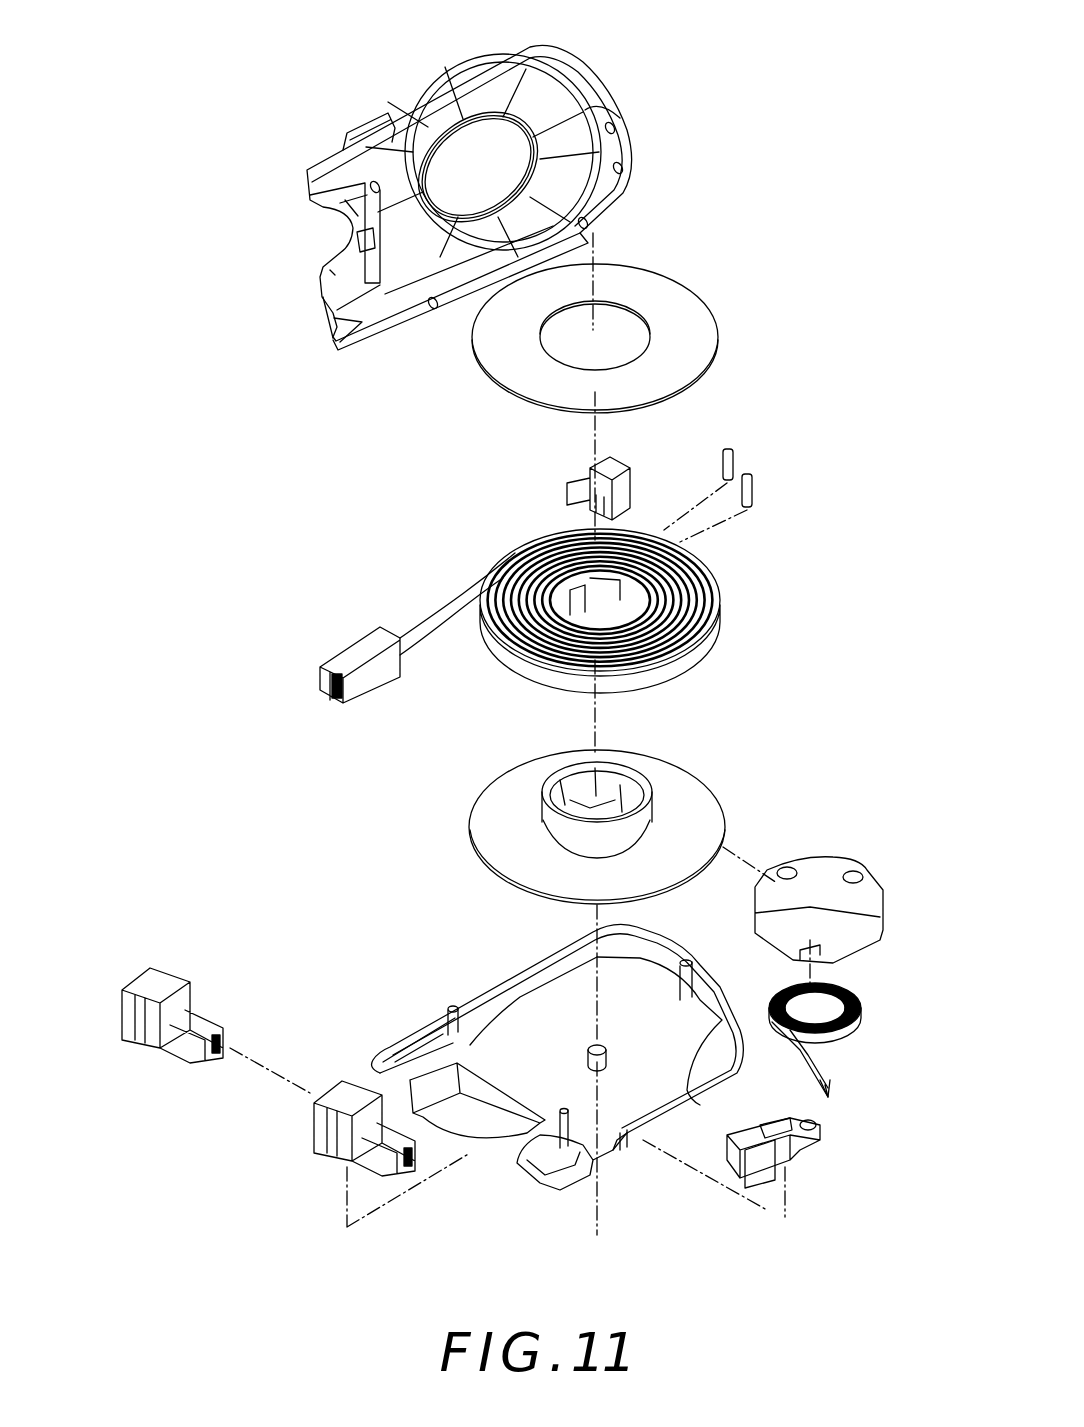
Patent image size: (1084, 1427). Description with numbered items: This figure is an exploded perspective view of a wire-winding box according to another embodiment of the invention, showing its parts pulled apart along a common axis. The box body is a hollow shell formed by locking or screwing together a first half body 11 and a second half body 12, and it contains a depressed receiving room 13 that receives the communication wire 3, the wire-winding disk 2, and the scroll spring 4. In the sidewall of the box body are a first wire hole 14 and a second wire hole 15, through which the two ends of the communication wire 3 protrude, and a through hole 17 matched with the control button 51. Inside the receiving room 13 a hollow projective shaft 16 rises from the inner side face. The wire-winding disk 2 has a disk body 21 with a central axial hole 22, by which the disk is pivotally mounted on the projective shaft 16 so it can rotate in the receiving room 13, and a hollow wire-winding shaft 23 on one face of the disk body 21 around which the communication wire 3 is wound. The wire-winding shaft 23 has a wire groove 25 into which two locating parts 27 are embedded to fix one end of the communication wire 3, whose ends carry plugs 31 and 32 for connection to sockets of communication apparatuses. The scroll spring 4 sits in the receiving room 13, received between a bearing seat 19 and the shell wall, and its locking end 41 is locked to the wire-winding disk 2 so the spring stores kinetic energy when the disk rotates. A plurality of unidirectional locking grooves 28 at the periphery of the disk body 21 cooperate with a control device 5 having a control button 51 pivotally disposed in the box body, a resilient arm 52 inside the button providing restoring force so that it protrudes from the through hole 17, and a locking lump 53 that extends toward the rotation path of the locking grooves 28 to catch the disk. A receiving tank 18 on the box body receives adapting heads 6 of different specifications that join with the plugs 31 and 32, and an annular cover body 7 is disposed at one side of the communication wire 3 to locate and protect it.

The wire-winding disk 2 is at (617, 804).
The communication wire 3 is at (718, 607).
The scroll spring 4 is at (862, 1025).
The control device 5 is at (778, 1160).
The adapting heads 6 is at (175, 985).
The annular cover body 7 is at (663, 320).
The first half body 11 is at (470, 1000).
The second half body 12 is at (407, 117).
The receiving room 13 is at (577, 113).
The first wire hole 14 is at (450, 1016).
The second wire hole 15 is at (463, 147).
The projective shaft 16 is at (610, 1148).
The through hole 17 is at (353, 130).
The receiving tank 18 is at (322, 282).
The bearing seat 19 is at (833, 917).
The disk body 21 is at (507, 833).
The central axial hole 22 is at (597, 820).
The wire-winding shaft 23 is at (640, 827).
The wire groove 25 is at (643, 773).
The locating parts 27 is at (735, 452).
The locking grooves 28 is at (513, 765).
The plug 31 is at (345, 658).
The plug 32 is at (622, 478).
The locking end 41 is at (828, 1085).
The control button 51 is at (768, 1165).
The resilient arm 52 is at (765, 1130).
The locking lump 53 is at (815, 1125).